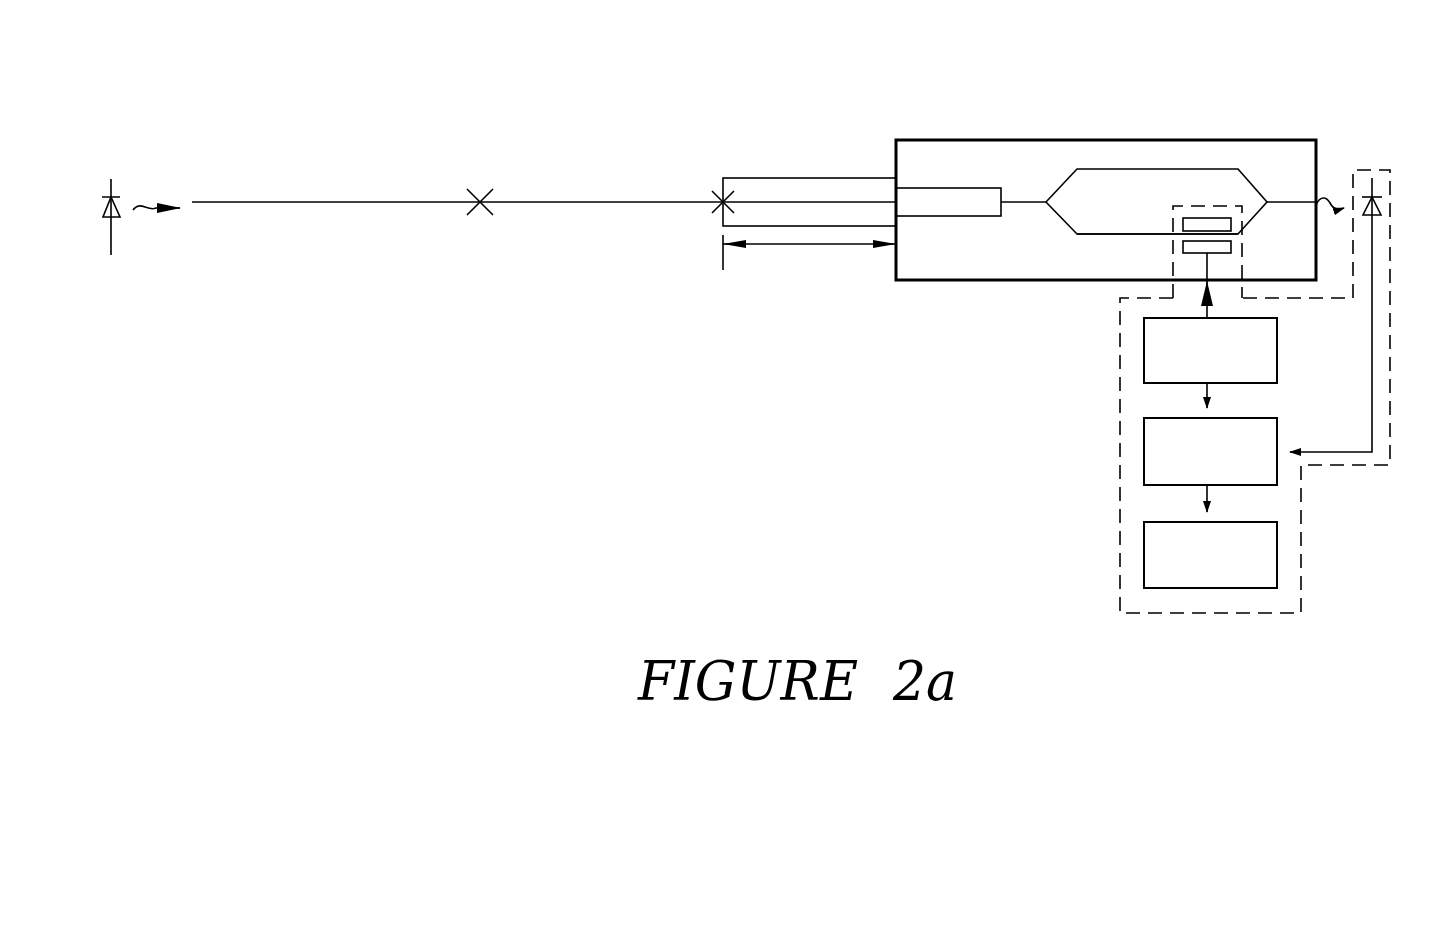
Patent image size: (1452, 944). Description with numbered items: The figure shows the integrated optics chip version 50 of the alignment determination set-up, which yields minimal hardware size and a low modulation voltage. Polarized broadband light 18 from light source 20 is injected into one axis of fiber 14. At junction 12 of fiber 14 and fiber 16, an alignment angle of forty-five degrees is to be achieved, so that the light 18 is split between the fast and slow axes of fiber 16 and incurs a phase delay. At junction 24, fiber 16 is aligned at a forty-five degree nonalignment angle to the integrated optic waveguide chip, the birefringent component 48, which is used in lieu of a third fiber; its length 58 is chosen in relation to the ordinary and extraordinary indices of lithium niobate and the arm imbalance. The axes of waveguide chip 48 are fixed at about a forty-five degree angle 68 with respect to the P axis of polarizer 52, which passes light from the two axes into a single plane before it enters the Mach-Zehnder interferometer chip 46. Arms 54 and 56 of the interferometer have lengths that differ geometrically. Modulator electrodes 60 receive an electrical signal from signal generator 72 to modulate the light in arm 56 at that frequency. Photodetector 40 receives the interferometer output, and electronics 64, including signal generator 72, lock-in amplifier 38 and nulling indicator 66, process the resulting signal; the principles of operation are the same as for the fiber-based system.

The junction 12 is at (475, 210).
The fiber 14 is at (292, 202).
The fiber 16 is at (590, 202).
The light 18 is at (157, 206).
The light source 20 is at (108, 224).
The junction 24 is at (720, 212).
The lock-in amplifier 38 is at (1144, 455).
The photodetector 40 is at (1383, 205).
The Mach-Zehnder interferometer chip 46 is at (1100, 122).
The birefringent component 48 is at (790, 178).
The integrated optics chip version 50 is at (980, 88).
The polarizer 52 is at (948, 188).
The arm 54 is at (1188, 169).
The arm 56 is at (1105, 235).
The length 58 is at (800, 246).
The modulator electrodes 60 is at (1200, 218).
The electronics 64 is at (1118, 335).
The nulling indicator 66 is at (1144, 558).
The angle 68 is at (925, 216).
The signal generator 72 is at (1144, 355).